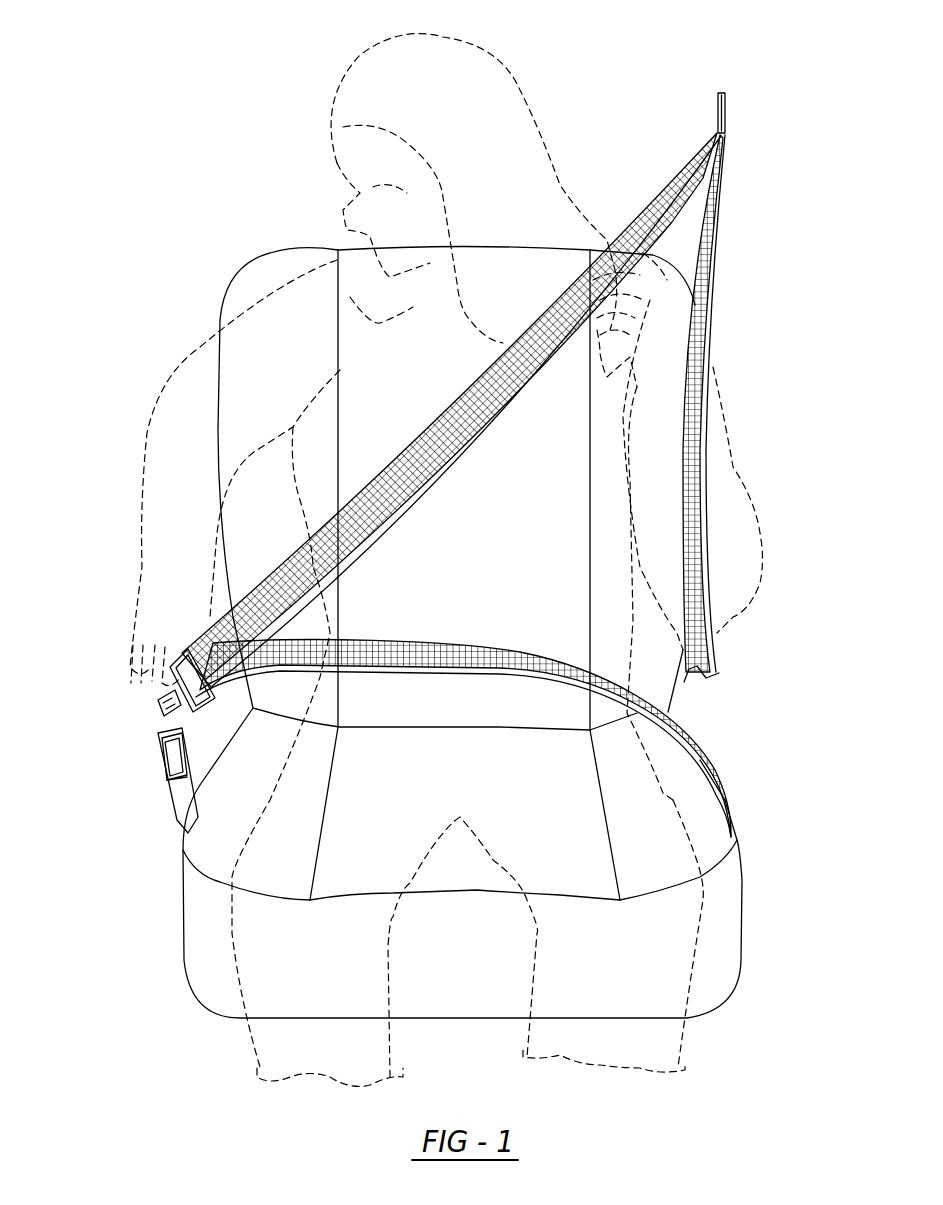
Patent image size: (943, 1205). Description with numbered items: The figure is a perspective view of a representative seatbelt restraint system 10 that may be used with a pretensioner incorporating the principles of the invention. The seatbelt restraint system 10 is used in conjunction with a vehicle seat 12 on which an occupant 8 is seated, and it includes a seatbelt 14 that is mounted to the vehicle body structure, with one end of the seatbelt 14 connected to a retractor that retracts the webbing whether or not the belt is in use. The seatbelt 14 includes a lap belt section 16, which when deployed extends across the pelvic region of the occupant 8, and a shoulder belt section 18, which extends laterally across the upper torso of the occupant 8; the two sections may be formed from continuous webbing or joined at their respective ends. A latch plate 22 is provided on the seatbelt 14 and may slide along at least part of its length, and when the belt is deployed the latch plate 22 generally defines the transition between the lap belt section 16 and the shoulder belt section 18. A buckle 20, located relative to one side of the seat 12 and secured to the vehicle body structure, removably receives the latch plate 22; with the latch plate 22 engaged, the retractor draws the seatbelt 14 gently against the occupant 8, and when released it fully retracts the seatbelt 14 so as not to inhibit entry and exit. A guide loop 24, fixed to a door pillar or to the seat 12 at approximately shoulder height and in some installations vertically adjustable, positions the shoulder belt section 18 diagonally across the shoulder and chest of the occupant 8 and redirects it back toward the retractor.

The occupant 8 is at (740, 480).
The seatbelt restraint system 10 is at (757, 202).
The vehicle seat 12 is at (200, 938).
The seatbelt 14 is at (712, 303).
The lap belt section 16 is at (422, 650).
The shoulder belt section 18 is at (650, 223).
The buckle 20 is at (170, 800).
The latch plate 22 is at (160, 714).
The guide loop 24 is at (727, 112).